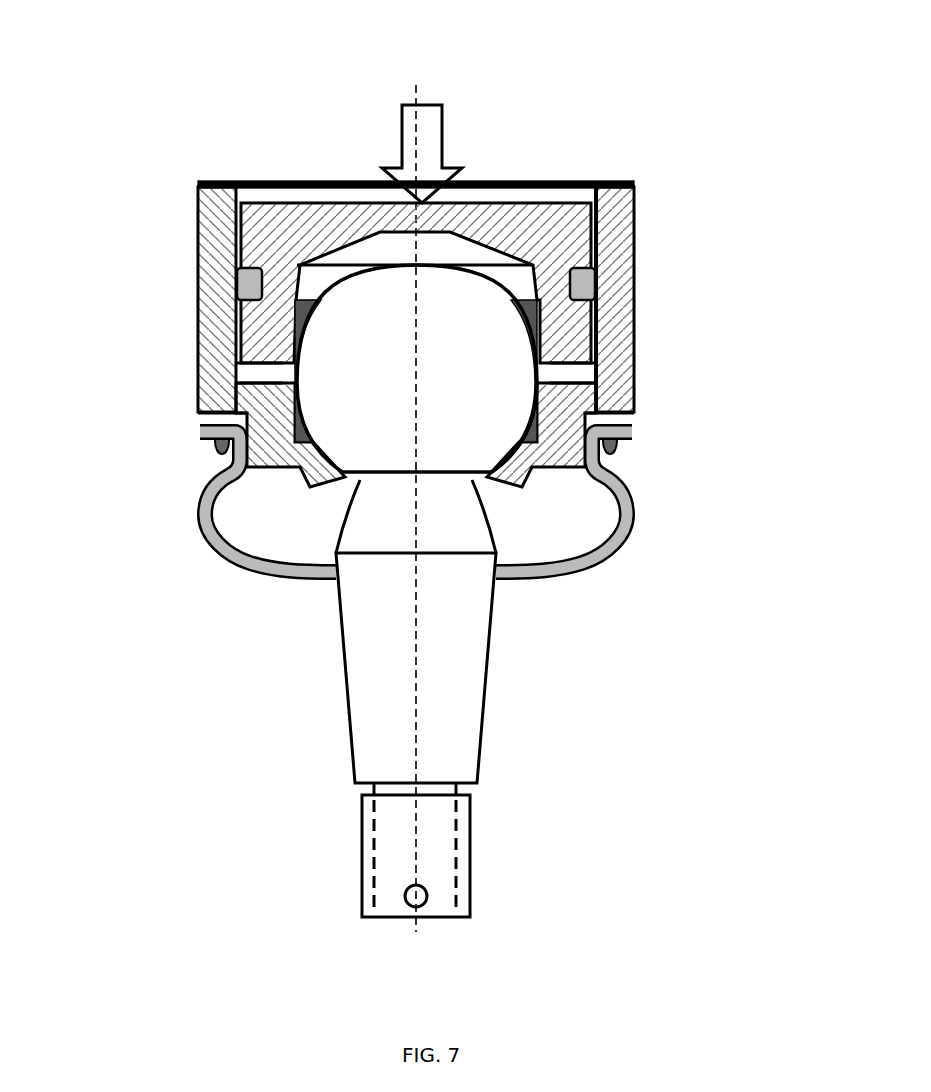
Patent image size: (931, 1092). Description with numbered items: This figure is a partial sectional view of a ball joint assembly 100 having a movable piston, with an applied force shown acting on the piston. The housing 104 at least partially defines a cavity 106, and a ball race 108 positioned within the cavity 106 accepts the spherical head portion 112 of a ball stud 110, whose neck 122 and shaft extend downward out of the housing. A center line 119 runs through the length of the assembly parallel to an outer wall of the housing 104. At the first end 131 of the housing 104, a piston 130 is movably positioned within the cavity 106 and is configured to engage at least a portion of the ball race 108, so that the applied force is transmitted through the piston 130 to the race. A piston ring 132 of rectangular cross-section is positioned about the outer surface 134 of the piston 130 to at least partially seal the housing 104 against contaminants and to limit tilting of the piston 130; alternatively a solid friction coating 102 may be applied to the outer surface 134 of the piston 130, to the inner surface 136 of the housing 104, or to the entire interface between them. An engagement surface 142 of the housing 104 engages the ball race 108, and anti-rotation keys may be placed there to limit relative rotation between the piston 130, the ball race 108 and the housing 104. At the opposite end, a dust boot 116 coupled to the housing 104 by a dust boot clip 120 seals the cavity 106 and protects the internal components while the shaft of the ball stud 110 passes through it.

The ball joint assembly 100 is at (535, 104).
The first end of the housing 131 is at (640, 156).
The housing 104 is at (223, 225).
The inner surface of the housing 136 is at (597, 322).
The cavity 106 is at (489, 218).
The piston 130 is at (549, 224).
The outer surface of the piston 134 is at (597, 265).
The piston ring 132 is at (587, 285).
The engagement surface of the housing 142 is at (551, 412).
The ball race 108 is at (281, 370).
The solid friction coating 102 is at (545, 370).
The head portion 112 is at (489, 439).
The dust boot clip 120 is at (214, 438).
The dust boot 116 is at (209, 546).
The neck 122 is at (450, 510).
The ball stud 110 is at (362, 603).
The center line 119 is at (410, 735).